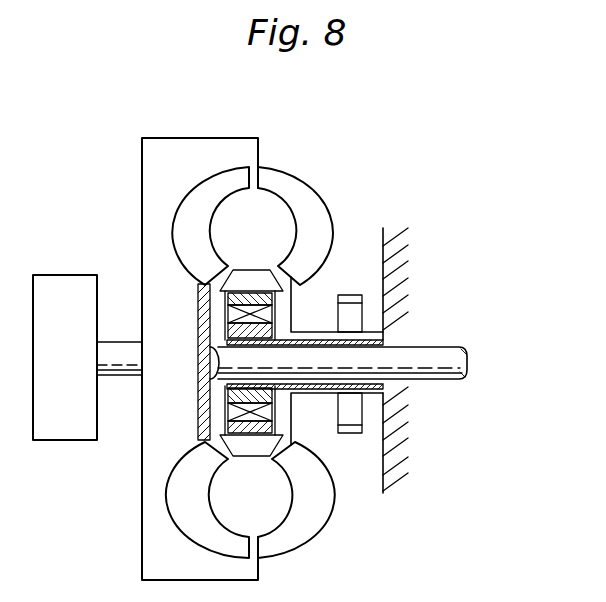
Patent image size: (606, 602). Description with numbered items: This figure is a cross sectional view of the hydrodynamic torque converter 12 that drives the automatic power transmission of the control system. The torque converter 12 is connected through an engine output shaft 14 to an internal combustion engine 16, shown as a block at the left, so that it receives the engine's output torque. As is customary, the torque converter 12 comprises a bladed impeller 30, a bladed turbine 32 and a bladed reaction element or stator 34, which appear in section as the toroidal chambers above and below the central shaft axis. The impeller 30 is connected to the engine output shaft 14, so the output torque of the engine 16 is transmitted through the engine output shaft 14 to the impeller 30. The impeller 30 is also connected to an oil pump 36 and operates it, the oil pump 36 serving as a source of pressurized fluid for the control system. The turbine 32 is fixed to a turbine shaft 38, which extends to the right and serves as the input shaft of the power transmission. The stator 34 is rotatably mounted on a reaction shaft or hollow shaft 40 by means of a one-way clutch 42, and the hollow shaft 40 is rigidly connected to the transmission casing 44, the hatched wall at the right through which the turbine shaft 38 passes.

The hydrodynamic torque converter 12 is at (273, 143).
The engine output shaft 14 is at (118, 352).
The internal combustion engine 16 is at (72, 369).
The bladed impeller 30 is at (330, 236).
The bladed turbine 32 is at (205, 236).
The bladed reaction element or stator 34 is at (251, 360).
The oil pump 36 is at (350, 416).
The turbine shaft 38 is at (428, 361).
The reaction shaft or hollow shaft 40 is at (369, 394).
The one-way clutch 42 is at (276, 312).
The transmission casing 44 is at (385, 247).